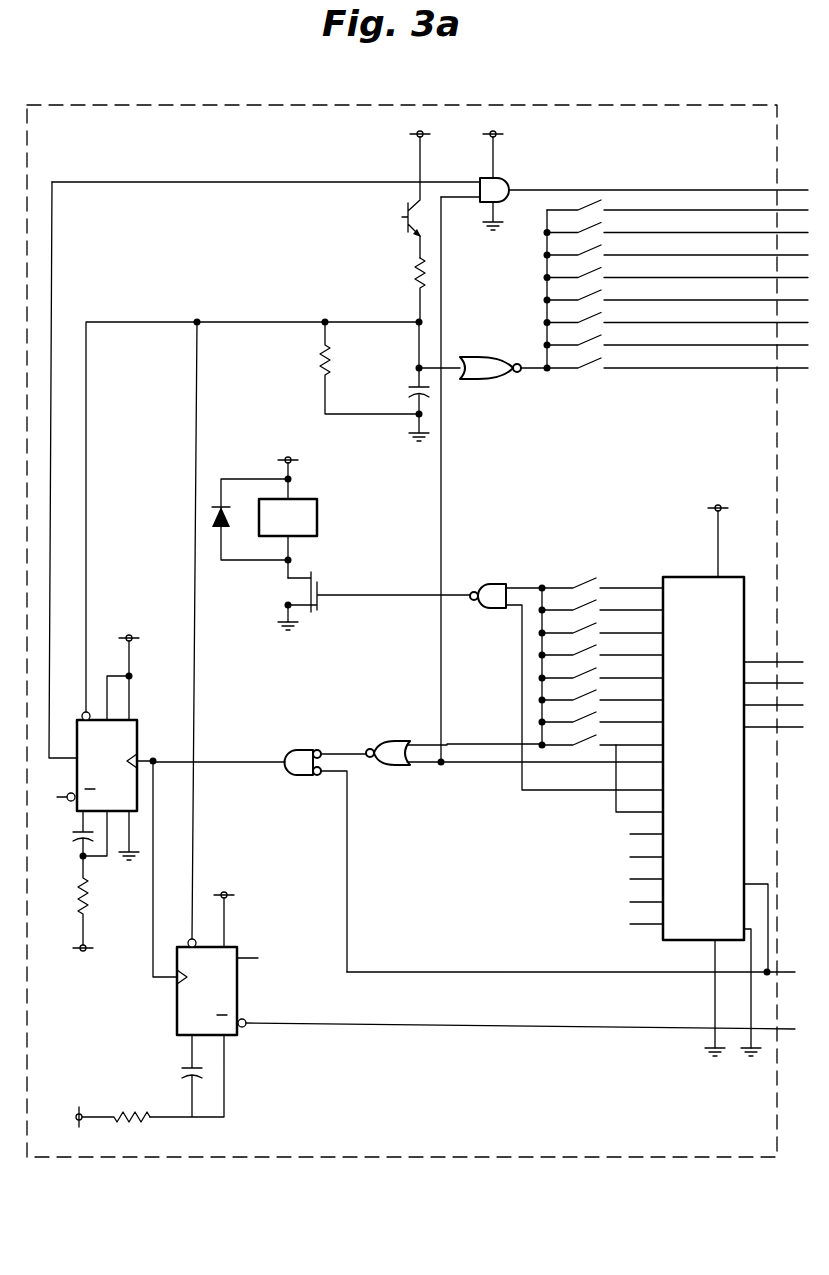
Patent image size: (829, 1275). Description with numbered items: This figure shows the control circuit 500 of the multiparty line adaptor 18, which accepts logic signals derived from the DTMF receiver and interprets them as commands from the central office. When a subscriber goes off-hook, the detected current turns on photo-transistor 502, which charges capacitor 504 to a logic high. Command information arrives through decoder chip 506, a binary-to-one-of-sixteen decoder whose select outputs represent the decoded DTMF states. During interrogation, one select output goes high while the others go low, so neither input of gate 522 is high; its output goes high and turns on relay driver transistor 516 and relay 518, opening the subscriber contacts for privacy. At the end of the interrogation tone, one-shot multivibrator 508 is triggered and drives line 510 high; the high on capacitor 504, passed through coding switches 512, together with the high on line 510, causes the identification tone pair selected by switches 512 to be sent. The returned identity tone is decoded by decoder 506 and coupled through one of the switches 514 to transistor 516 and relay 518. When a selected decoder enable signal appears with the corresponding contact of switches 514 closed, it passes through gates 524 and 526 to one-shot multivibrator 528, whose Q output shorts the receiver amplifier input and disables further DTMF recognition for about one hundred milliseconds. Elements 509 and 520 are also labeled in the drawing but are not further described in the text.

The control circuit 500 is at (182, 162).
The photo-transistor 502 is at (422, 217).
The capacitor 504 is at (430, 388).
The decoder chip 506 is at (668, 944).
The one-shot multivibrator 508 is at (137, 787).
The flip-flop preset input 509 is at (137, 728).
The line 510 is at (557, 190).
The switches 512 is at (575, 414).
The switches 514 is at (596, 548).
The relay driver transistor 516 is at (320, 610).
The relay 518 is at (317, 520).
The connection line 520 is at (532, 582).
The gate 522 is at (492, 582).
The gate 524 is at (393, 740).
The gate 526 is at (308, 748).
The one-shot multivibrator 528 is at (238, 980).
The multiparty line adaptor 18 is at (379, 1086).